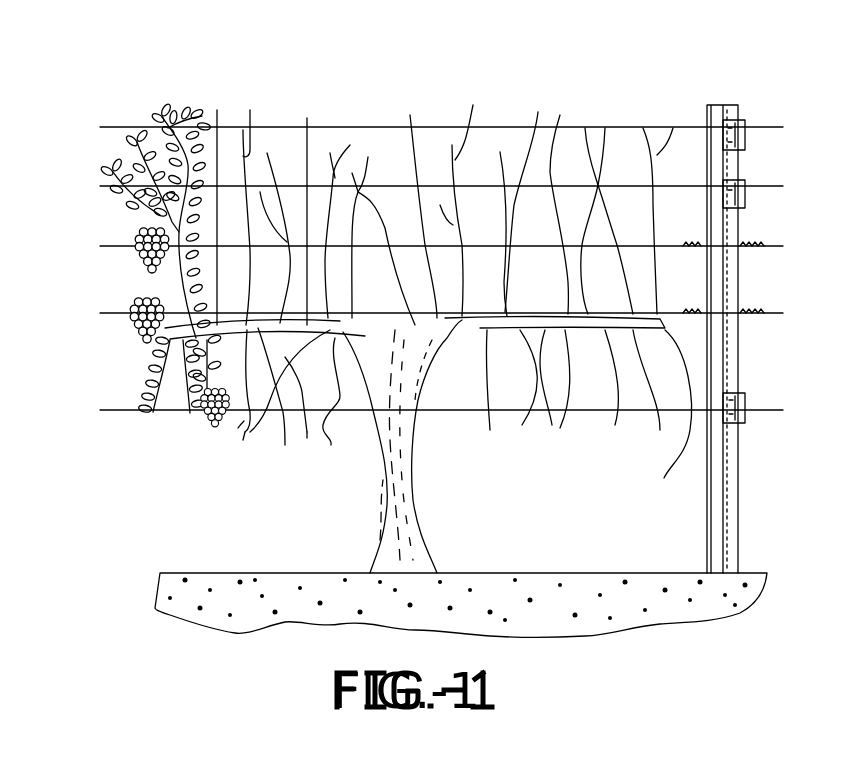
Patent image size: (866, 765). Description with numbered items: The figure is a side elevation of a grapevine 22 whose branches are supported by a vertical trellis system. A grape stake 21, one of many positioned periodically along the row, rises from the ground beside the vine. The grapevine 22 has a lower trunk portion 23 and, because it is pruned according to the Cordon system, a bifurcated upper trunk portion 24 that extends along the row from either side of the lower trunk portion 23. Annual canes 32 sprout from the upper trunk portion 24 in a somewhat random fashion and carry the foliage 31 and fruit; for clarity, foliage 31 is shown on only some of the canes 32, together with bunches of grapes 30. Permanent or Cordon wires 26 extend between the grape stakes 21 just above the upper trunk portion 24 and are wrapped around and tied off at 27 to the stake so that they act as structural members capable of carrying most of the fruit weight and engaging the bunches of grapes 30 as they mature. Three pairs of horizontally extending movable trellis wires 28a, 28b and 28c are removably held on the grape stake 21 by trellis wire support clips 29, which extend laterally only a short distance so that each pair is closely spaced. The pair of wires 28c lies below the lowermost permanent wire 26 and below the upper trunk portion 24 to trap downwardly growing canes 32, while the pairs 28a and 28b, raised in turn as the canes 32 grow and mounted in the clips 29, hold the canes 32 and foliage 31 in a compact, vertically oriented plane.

The grape stake 21 is at (722, 102).
The grapevine 22 is at (265, 456).
The lower trunk portion 23 is at (395, 483).
The upper trunk portion 24 is at (155, 336).
The permanent wire 26 is at (116, 310).
The tie-off 27 is at (755, 246).
The movable trellis wire 28a is at (120, 186).
The movable trellis wire 28b is at (118, 127).
The movable trellis wire 28c is at (322, 432).
The trellis wire support clip 29 is at (748, 137).
The bunch of grapes 30 is at (142, 335).
The foliage 31 is at (125, 223).
The cane 32 is at (218, 163).